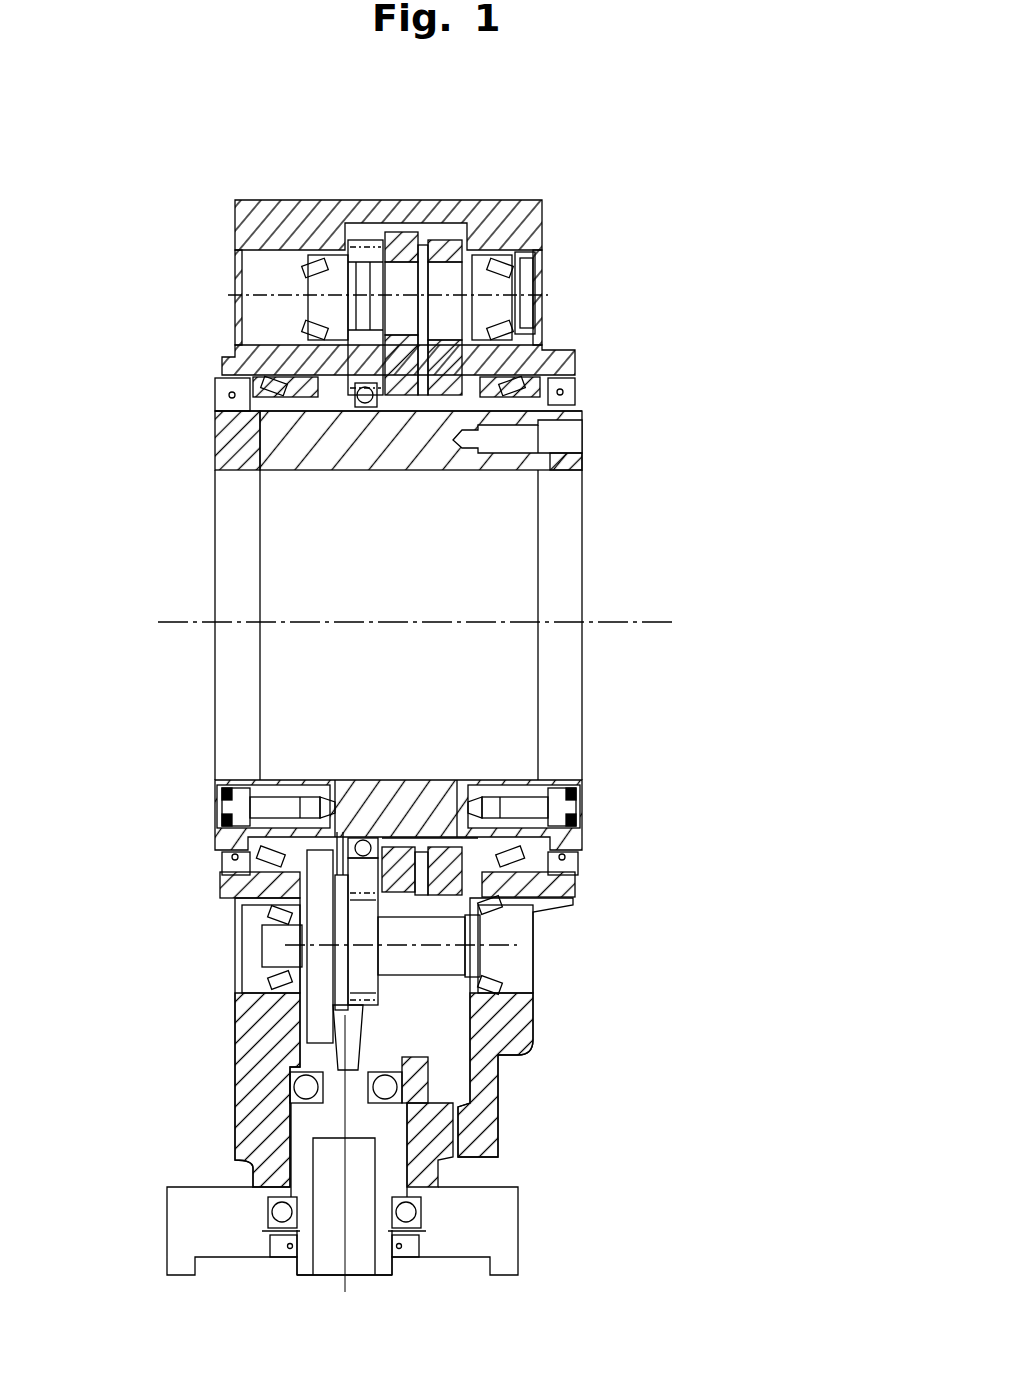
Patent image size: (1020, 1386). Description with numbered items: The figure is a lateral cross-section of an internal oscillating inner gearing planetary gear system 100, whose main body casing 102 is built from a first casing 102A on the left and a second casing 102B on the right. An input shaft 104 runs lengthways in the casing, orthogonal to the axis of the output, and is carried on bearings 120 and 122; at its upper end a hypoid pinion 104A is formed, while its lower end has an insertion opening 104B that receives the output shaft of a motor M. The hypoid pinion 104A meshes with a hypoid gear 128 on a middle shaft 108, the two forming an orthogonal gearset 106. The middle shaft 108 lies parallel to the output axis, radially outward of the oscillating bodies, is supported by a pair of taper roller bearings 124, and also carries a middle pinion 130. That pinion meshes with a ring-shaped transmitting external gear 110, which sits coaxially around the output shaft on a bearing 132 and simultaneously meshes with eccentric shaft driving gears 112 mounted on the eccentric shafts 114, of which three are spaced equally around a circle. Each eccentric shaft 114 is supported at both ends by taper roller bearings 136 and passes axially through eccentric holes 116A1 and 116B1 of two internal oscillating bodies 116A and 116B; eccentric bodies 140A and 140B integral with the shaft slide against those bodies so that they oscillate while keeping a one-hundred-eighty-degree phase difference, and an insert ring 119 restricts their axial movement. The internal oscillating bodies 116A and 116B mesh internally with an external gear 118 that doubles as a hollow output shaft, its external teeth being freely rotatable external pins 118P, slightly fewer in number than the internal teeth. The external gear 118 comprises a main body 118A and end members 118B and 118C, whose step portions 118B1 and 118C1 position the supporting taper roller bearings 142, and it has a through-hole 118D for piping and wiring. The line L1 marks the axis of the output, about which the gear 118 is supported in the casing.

The planetary gear system 100 is at (642, 260).
The main body casing 102 is at (527, 157).
The first casing 102A is at (365, 245).
The second casing 102B is at (505, 228).
The input shaft 104 is at (368, 1123).
The hypoid pinion 104A is at (363, 1027).
The insertion opening 104B is at (362, 1237).
The orthogonal gearset 106 is at (300, 1055).
The middle shaft 108 is at (435, 938).
The transmitting external gear 110 is at (220, 435).
The eccentric shaft driving gears 112 is at (290, 372).
The eccentric shaft 114 is at (530, 287).
The internal oscillating body 116A is at (398, 848).
The eccentric hole 116A1 is at (372, 268).
The internal oscillating body 116B is at (447, 862).
The eccentric hole 116B1 is at (542, 218).
The external gear 118 is at (525, 533).
The main body 118A is at (490, 468).
The end member 118B is at (250, 472).
The step portion 118B1 is at (240, 818).
The end member 118C is at (563, 468).
The step portion 118C1 is at (565, 822).
The through-hole 118D is at (272, 778).
The external pins 118P is at (430, 848).
The insert ring 119 is at (395, 420).
The bearing 120 is at (385, 1085).
The bearing 122 is at (407, 1208).
The taper roller bearings 124 is at (487, 962).
The hypoid gear 128 is at (255, 895).
The middle pinion 130 is at (367, 1012).
The bearing 132 is at (352, 832).
The taper roller bearings 136 is at (320, 334).
The eccentric body 140A is at (330, 298).
The eccentric body 140B is at (447, 330).
The taper roller bearings 142 is at (222, 400).
The axis L1 is at (668, 625).
The motor M is at (385, 1309).